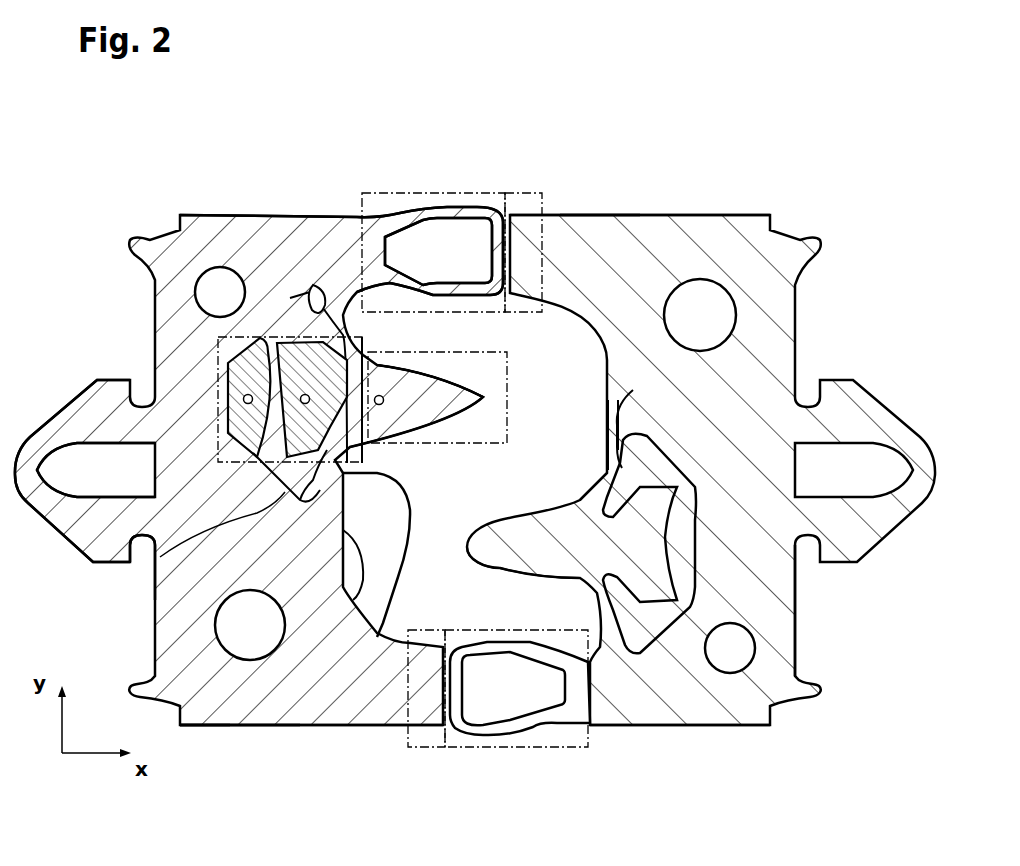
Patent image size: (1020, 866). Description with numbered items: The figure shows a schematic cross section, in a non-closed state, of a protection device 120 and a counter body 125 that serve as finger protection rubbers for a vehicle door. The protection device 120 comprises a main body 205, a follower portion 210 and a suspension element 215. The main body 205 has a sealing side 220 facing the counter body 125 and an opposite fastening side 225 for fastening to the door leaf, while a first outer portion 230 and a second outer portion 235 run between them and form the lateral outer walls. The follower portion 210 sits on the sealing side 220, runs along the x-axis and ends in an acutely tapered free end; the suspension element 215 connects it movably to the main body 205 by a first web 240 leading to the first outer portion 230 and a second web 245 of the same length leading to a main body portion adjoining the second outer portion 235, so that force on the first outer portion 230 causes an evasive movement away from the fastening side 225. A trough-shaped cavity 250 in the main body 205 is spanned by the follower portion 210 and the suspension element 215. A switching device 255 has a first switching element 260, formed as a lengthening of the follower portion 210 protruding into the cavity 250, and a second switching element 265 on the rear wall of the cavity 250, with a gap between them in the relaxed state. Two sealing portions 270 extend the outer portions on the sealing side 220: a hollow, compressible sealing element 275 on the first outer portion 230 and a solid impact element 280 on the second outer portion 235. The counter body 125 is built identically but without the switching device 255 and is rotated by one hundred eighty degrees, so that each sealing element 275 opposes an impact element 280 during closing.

The protection device 120 is at (210, 165).
The counter body 125 is at (802, 165).
The main body 205 is at (781, 612).
The follower portion 210 is at (450, 390).
The suspension element 215 is at (347, 345).
The sealing side 220 is at (313, 480).
The fastening side 225 is at (87, 331).
The first outer portion 230 is at (270, 205).
The second outer portion 235 is at (597, 205).
The first web 240 is at (339, 266).
The second web 245 is at (343, 587).
The cavity 250 is at (300, 620).
The switching device 255 is at (213, 343).
The first switching element 260 is at (153, 563).
The second switching element 265 is at (220, 377).
The sealing portion 270 is at (480, 138).
The sealing element 275 is at (432, 208).
The impact element 280 is at (528, 215).